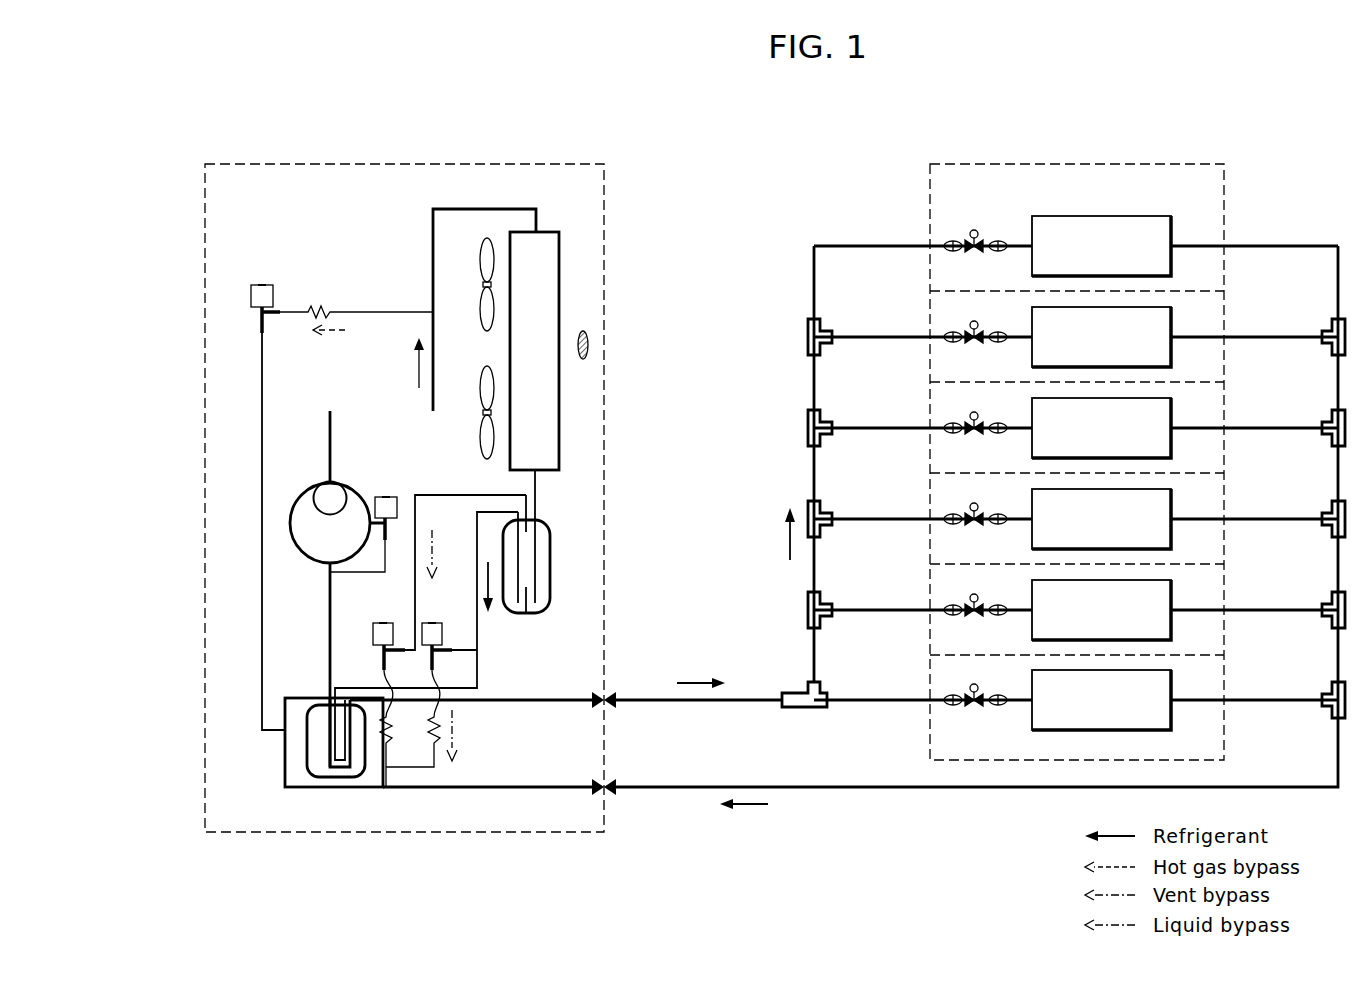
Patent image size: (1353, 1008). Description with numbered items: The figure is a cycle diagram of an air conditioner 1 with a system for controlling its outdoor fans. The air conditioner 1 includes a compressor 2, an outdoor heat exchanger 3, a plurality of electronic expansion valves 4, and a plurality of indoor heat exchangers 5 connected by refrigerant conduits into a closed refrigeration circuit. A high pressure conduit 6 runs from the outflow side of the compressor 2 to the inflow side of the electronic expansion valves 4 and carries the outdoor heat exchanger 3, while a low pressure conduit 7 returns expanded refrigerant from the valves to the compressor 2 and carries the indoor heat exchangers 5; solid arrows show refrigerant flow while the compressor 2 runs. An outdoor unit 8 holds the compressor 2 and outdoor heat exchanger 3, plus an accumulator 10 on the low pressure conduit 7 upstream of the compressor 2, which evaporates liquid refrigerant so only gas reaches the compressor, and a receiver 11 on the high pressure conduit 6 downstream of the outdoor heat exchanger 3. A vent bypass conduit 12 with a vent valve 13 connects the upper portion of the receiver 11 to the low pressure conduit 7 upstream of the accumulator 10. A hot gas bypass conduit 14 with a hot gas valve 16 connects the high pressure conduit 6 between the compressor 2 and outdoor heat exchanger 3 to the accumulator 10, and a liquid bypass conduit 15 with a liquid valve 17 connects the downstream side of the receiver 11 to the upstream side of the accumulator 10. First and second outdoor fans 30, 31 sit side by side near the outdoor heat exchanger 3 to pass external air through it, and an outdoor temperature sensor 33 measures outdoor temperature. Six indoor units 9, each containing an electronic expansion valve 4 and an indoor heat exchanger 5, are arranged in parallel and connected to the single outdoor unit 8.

The air conditioner 1 is at (752, 186).
The compressor 2 is at (290, 522).
The outdoor heat exchanger 3 is at (559, 278).
The electronic expansion valve 4 is at (968, 242).
The indoor heat exchanger 5 is at (1172, 232).
The high pressure conduit 6 is at (490, 209).
The low pressure conduit 7 is at (497, 787).
The outdoor unit 8 is at (606, 207).
The indoor unit 9 is at (958, 164).
The accumulator 10 is at (312, 787).
The receiver 11 is at (550, 565).
The vent bypass conduit 12 is at (415, 592).
The vent valve 13 is at (373, 633).
The hot gas bypass conduit 14 is at (262, 380).
The liquid bypass conduit 15 is at (450, 652).
The hot gas valve 16 is at (251, 293).
The liquid valve 17 is at (442, 632).
The first outdoor fan 30 is at (480, 262).
The second outdoor fan 31 is at (480, 392).
The outdoor temperature sensor 33 is at (589, 346).